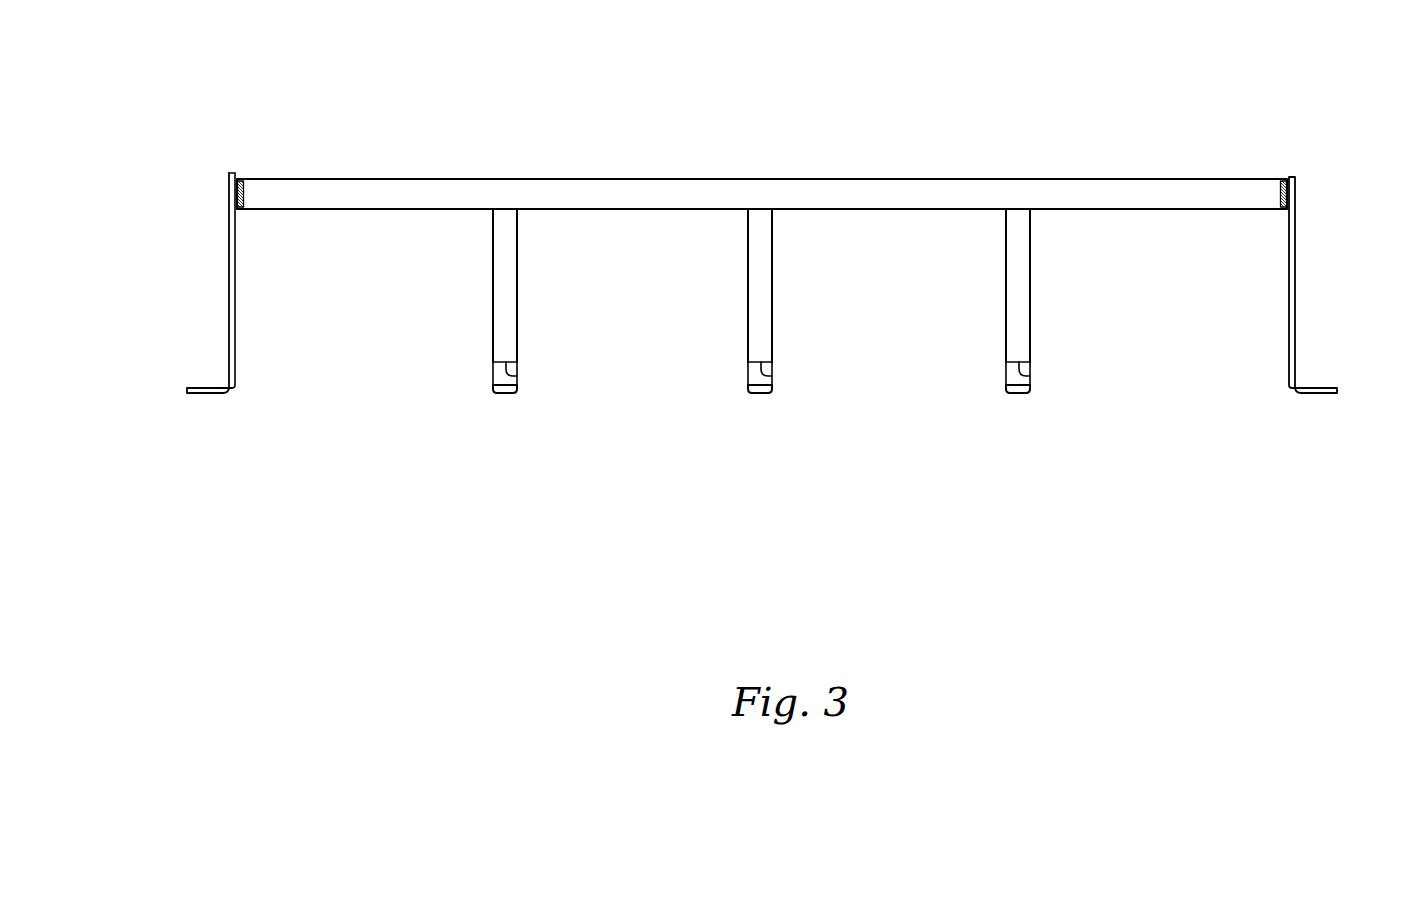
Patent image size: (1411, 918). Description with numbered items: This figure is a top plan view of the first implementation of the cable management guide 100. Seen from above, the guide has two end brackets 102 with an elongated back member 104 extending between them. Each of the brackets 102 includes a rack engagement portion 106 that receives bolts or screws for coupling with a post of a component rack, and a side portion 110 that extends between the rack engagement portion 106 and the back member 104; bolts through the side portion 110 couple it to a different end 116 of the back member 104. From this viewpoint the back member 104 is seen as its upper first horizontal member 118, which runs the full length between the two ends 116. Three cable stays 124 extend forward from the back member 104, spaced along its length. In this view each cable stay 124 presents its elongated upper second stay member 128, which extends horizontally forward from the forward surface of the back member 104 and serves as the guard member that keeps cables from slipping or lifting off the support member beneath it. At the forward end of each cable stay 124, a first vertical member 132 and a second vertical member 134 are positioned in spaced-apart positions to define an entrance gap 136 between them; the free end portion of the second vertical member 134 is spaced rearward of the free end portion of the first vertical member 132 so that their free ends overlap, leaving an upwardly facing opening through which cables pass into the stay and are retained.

The cable management guide 100 is at (518, 620).
The end bracket 102 is at (186, 284).
The elongated back member 104 is at (714, 135).
The rack engagement portion 106 is at (205, 395).
The side portion 110 is at (238, 306).
The end of the back member 116 is at (235, 173).
The upper first horizontal member 118 is at (630, 189).
The cable stay 124 is at (504, 445).
The second stay member 128 is at (502, 296).
The first vertical member 132 is at (505, 393).
The second vertical member 134 is at (519, 377).
The entrance gap 136 is at (500, 376).